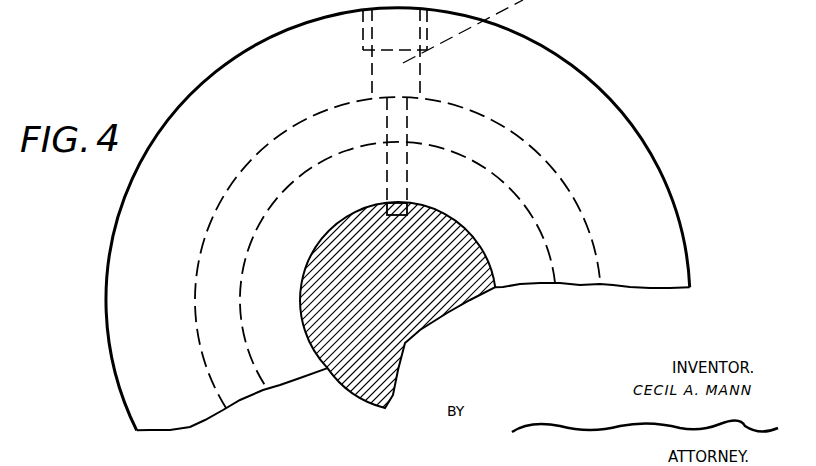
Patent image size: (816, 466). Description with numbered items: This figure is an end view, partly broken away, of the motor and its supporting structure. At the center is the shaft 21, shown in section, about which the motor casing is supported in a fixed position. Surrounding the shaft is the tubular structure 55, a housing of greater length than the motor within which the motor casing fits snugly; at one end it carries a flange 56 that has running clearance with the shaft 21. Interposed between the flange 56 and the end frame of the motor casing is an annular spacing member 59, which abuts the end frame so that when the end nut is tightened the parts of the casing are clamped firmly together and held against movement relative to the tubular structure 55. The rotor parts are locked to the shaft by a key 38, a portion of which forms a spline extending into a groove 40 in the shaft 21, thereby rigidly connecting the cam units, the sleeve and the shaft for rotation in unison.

The shaft 21 is at (497, 262).
The key 38 is at (387, 178).
The groove 40 is at (398, 204).
The tubular structure 55 is at (567, 55).
The flange 56 is at (517, 213).
The annular spacing member 59 is at (513, 160).